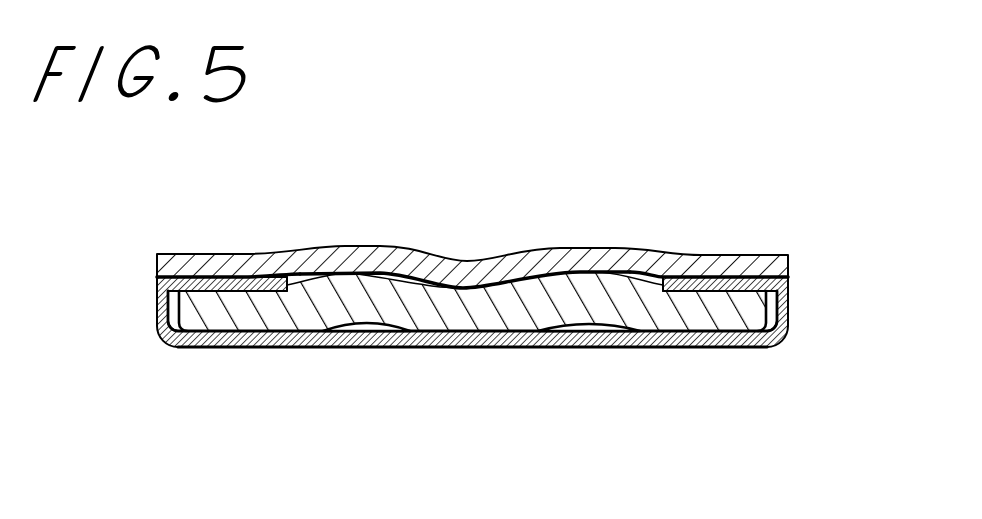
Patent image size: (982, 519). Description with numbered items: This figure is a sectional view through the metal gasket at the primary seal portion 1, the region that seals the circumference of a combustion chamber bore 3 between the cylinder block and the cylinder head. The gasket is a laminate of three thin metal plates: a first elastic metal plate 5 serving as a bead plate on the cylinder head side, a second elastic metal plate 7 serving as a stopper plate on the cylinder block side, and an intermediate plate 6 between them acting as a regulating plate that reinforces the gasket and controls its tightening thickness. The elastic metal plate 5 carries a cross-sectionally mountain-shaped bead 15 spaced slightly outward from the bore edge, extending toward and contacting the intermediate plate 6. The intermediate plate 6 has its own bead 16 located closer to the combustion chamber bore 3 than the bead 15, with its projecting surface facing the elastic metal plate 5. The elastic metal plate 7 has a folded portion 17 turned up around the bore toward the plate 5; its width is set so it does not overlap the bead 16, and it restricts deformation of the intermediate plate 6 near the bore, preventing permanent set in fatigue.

The primary seal portion 1 is at (468, 278).
The combustion chamber bore 3 is at (158, 320).
The first elastic metal plate 5 is at (472, 226).
The intermediate plate 6 is at (262, 312).
The second elastic metal plate 7 is at (477, 347).
The bead 15 is at (432, 264).
The bead 16 is at (373, 307).
The folded portion 17 is at (227, 280).